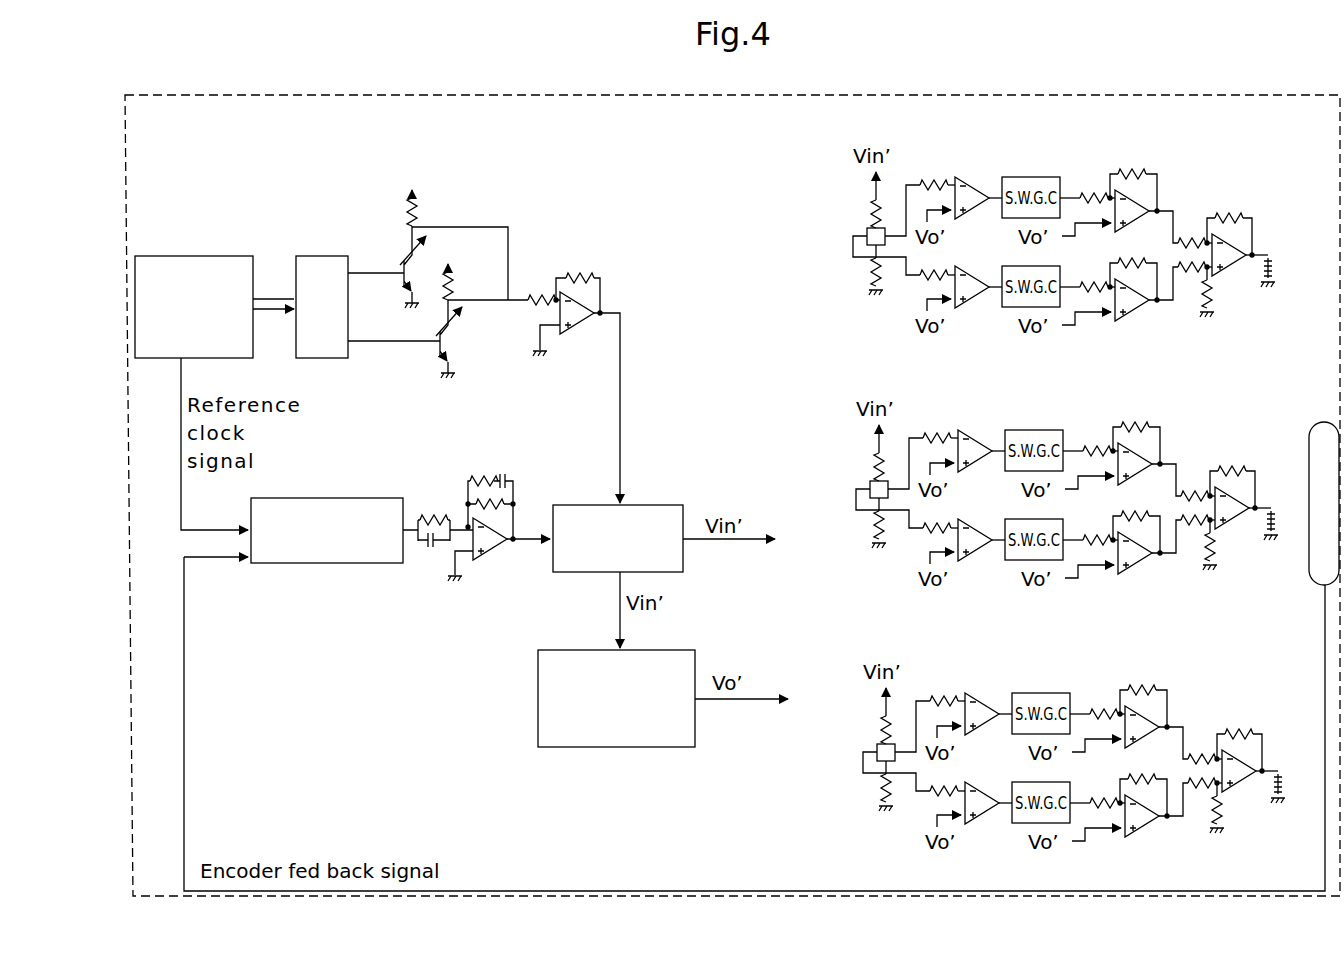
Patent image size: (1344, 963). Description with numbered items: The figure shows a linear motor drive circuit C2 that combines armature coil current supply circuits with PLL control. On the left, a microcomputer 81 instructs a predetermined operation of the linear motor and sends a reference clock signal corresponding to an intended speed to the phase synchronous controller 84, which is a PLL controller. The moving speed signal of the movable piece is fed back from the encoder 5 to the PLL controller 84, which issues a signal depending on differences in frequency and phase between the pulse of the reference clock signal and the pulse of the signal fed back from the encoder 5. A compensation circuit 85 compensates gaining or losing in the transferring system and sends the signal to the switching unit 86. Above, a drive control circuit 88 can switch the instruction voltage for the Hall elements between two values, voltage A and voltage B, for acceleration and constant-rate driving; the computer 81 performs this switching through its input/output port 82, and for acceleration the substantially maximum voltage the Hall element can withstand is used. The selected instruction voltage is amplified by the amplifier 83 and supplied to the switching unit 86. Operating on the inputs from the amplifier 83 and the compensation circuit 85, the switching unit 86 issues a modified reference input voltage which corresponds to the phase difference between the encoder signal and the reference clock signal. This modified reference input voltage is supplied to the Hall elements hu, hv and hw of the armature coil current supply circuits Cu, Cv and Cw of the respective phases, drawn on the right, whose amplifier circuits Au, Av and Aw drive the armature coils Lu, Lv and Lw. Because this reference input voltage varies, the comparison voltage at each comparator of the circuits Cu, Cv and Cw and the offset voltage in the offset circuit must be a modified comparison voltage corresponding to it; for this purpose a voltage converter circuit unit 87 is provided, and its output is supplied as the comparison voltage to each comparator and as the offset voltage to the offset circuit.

The encoder 5 is at (1314, 424).
The microcomputer 81 is at (220, 254).
The input/output port 82 is at (330, 254).
The amplifier 83 is at (588, 255).
The phase synchronous controller 84 is at (352, 497).
The compensation circuit 85 is at (496, 460).
The switching unit 86 is at (653, 504).
The voltage converter circuit unit 87 is at (675, 650).
The drive control circuit 88 is at (474, 160).
The linear motor drive circuit C2 is at (978, 88).
The U-phase amplifier circuit Au is at (1143, 152).
The V-phase amplifier circuit Av is at (1088, 481).
The W-phase amplifier circuit Aw is at (1095, 744).
The armature coil current supply circuit Cu is at (841, 173).
The armature coil current supply circuit Cv is at (856, 471).
The armature coil current supply circuit Cw is at (863, 734).
The Hall element hu is at (866, 232).
The Hall element hv is at (854, 475).
The Hall element hw is at (861, 738).
The U-phase armature coil Lu is at (1271, 257).
The V-phase armature coil Lv is at (1278, 508).
The W-phase armature coil Lw is at (1287, 771).